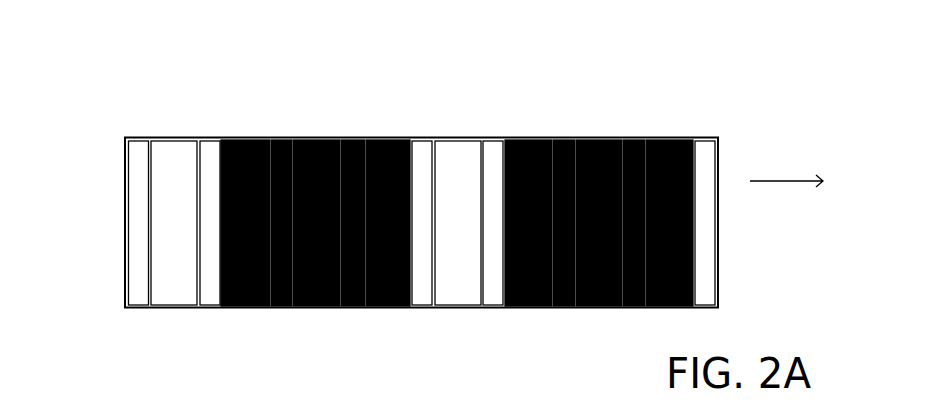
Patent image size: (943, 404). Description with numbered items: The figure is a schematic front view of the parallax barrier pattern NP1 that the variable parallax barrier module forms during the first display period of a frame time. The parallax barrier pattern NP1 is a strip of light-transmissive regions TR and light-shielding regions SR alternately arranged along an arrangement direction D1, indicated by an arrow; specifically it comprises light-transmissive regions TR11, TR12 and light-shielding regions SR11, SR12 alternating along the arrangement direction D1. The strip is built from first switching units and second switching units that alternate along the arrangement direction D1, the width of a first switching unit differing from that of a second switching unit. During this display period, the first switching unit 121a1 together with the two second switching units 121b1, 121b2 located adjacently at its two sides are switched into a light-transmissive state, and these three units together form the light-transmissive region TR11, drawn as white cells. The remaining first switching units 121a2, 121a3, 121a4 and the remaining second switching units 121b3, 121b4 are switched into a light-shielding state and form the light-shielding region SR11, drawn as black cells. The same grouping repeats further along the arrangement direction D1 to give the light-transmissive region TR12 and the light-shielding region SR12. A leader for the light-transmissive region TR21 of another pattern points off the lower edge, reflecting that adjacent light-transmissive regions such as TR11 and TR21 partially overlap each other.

The light-transmissive regions TR is at (63, 365).
The light-shielding regions SR is at (332, 92).
The light-transmissive region TR11 is at (162, 237).
The light-transmissive region TR12 is at (481, 136).
The light-transmissive region TR21 is at (100, 403).
The light-shielding region SR11 is at (313, 237).
The light-shielding region SR12 is at (658, 132).
The first switching unit 121a1 is at (167, 287).
The first switching unit 121a2 is at (245, 300).
The first switching unit 121a3 is at (321, 300).
The first switching unit 121a4 is at (388, 300).
The second switching unit 121b1 is at (130, 285).
The second switching unit 121b2 is at (208, 287).
The second switching unit 121b3 is at (277, 300).
The second switching unit 121b4 is at (351, 300).
The arrangement direction D1 is at (786, 166).
The parallax barrier pattern NP1 is at (757, 300).